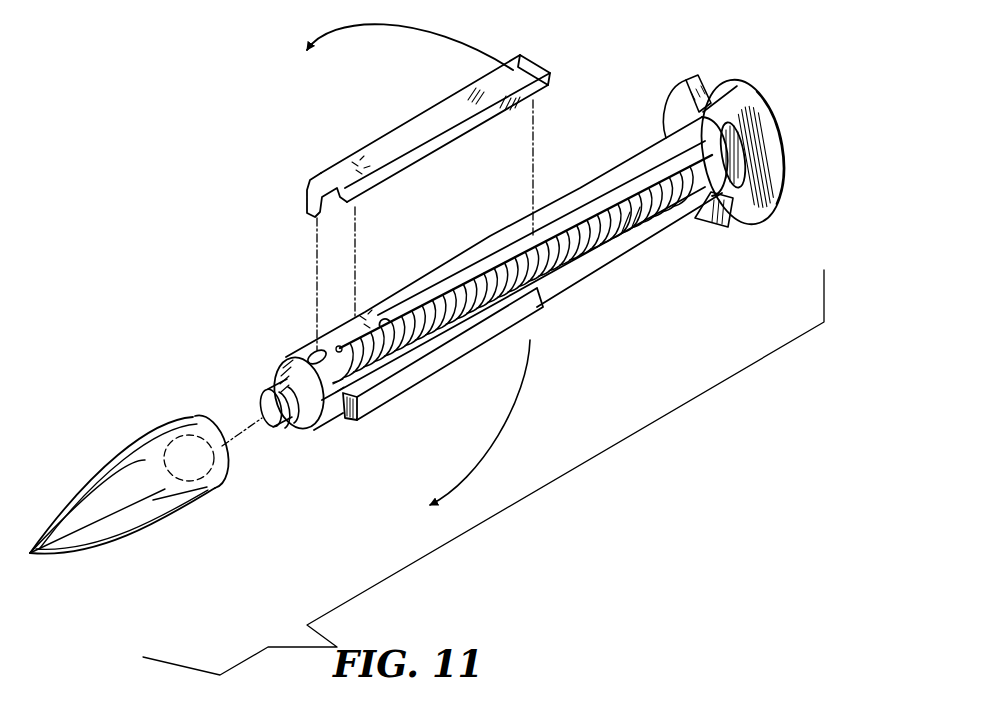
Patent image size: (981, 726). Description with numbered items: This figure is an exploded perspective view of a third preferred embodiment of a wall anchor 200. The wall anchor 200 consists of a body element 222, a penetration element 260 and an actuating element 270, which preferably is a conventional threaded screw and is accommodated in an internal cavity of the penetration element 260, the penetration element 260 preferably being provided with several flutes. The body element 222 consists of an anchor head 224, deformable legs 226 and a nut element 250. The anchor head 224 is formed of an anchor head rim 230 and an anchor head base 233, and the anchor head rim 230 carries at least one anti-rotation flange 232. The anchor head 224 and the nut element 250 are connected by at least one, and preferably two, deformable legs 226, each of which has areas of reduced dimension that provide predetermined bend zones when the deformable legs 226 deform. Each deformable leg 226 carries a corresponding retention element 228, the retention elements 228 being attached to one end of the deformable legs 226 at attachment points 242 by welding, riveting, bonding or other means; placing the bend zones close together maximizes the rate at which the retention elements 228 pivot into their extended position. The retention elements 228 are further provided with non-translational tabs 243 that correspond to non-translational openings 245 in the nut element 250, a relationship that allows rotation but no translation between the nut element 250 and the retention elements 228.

The wall anchor 200 is at (624, 115).
The body element 222 is at (550, 150).
The anchor head 224 is at (763, 152).
The deformable legs 226 is at (580, 188).
The retention elements 228 is at (410, 130).
The anchor head rim 230 is at (774, 185).
The anti-rotation flange 232 is at (705, 105).
The anchor head base 233 is at (727, 140).
The attachment points 242 is at (350, 162).
The non-translational tabs 243 is at (308, 212).
The non-translational openings 245 is at (307, 348).
The nut element 250 is at (333, 432).
The penetration element 260 is at (130, 430).
The actuating element 270 is at (632, 222).